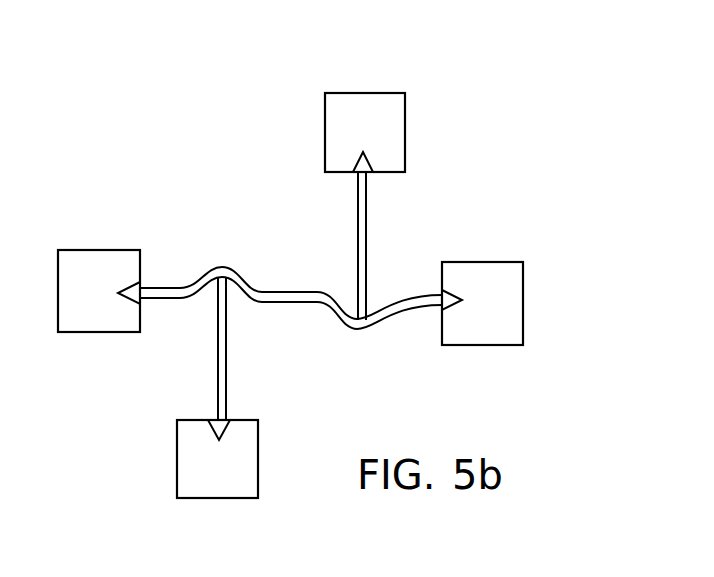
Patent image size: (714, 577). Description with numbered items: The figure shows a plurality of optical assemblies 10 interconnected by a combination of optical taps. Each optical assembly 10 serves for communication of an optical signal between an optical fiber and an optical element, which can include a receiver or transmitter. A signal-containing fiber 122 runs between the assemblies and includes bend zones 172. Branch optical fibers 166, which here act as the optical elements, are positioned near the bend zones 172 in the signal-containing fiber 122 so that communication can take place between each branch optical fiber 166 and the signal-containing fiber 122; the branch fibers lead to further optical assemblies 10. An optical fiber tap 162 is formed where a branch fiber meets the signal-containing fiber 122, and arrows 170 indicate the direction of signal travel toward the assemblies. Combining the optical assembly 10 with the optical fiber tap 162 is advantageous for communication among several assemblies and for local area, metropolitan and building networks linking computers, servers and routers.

The optical assembly 10 is at (97, 270).
The signal-containing fiber 122 is at (302, 302).
The optical fiber tap 162 is at (240, 298).
The branch optical fiber 166 is at (368, 230).
The arrow / flow direction indicator 170 is at (140, 283).
The bend zone 172 is at (253, 258).